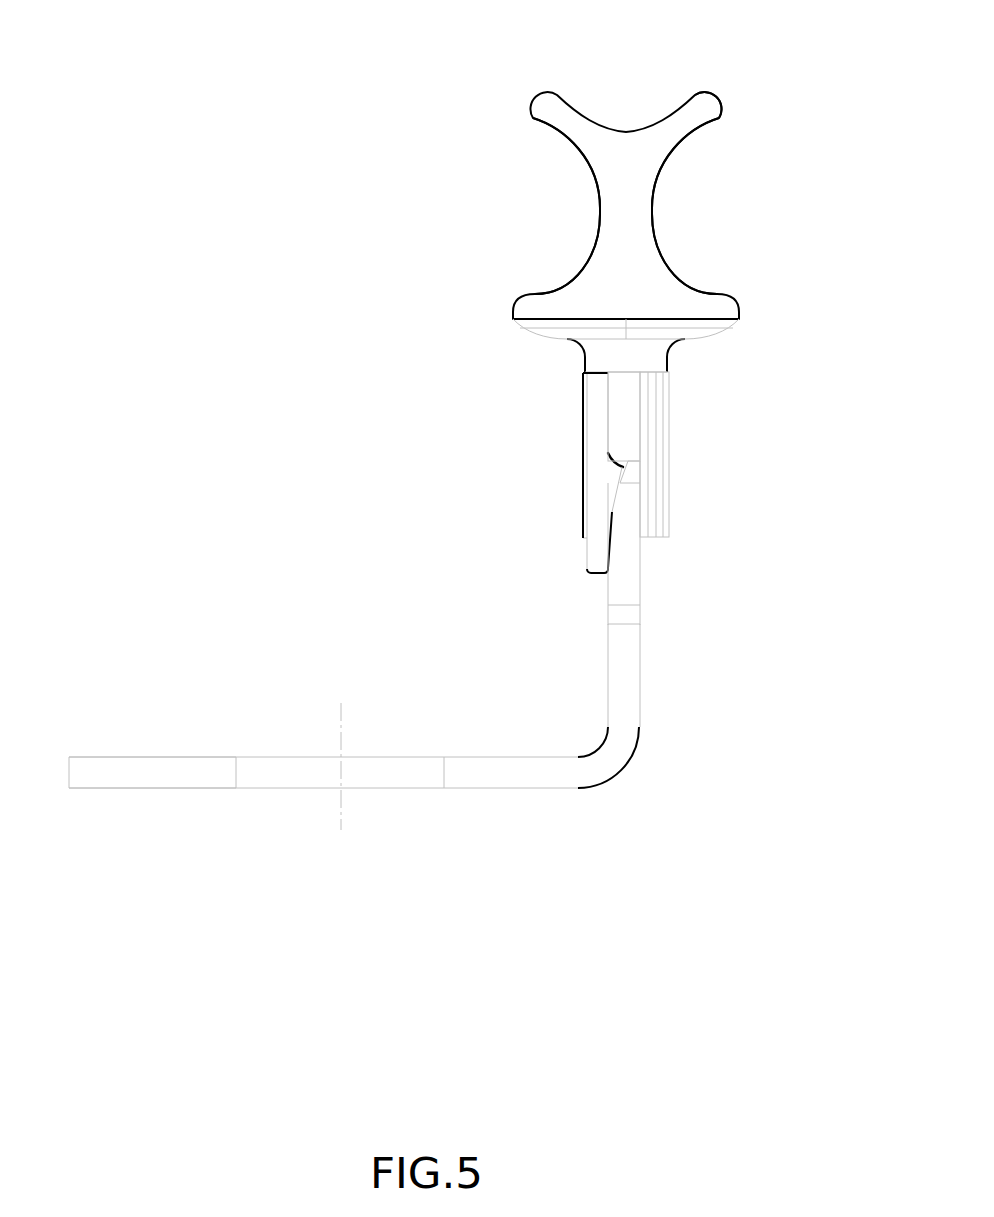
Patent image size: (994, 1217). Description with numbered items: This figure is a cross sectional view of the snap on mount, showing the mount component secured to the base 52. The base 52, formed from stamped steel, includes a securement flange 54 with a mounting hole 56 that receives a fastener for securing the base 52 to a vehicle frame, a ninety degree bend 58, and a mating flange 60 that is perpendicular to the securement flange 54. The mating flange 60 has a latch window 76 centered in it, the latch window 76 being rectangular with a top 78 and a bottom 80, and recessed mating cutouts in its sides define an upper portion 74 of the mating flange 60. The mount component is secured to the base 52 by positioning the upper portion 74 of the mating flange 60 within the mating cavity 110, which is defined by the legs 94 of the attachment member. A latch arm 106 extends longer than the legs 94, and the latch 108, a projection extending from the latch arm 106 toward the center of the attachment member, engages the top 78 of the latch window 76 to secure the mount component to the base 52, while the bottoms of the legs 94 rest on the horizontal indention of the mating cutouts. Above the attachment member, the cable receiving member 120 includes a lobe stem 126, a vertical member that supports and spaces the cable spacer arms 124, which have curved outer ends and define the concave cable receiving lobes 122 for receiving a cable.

The cable receiving member 120 is at (562, 187).
The cable receiving lobes 122 is at (663, 250).
The cable spacer arms 124 is at (713, 108).
The lobe stem 126 is at (618, 232).
The legs 94 is at (619, 463).
The latch arm 106 is at (532, 473).
The mating cavity 110 is at (603, 456).
The latch 108 is at (617, 466).
The upper portion of the mating flange 74 is at (625, 430).
The top of the latch window 78 is at (628, 468).
The latch window 76 is at (619, 605).
The bottom of the latch window 80 is at (610, 615).
The mating flange 60 is at (625, 693).
The 90 degree bend 58 is at (636, 760).
The base 52 is at (323, 773).
The securement flange 54 is at (153, 772).
The mounting hole 56 is at (275, 777).